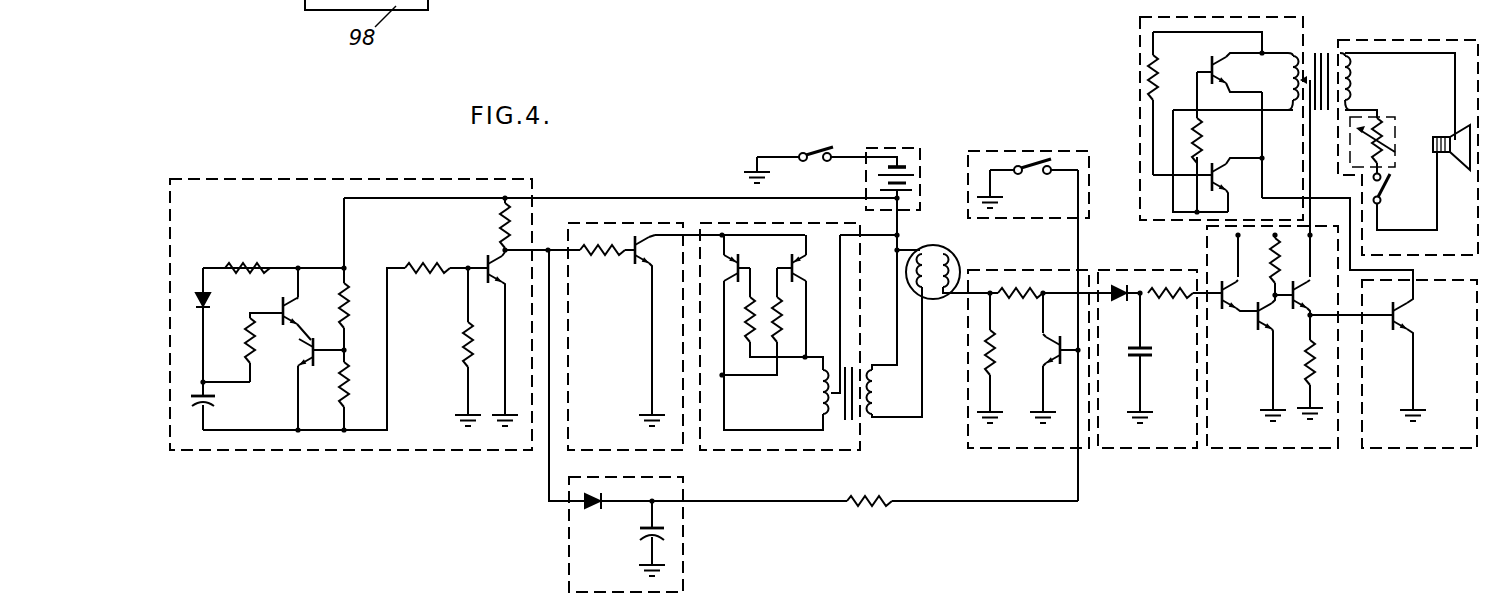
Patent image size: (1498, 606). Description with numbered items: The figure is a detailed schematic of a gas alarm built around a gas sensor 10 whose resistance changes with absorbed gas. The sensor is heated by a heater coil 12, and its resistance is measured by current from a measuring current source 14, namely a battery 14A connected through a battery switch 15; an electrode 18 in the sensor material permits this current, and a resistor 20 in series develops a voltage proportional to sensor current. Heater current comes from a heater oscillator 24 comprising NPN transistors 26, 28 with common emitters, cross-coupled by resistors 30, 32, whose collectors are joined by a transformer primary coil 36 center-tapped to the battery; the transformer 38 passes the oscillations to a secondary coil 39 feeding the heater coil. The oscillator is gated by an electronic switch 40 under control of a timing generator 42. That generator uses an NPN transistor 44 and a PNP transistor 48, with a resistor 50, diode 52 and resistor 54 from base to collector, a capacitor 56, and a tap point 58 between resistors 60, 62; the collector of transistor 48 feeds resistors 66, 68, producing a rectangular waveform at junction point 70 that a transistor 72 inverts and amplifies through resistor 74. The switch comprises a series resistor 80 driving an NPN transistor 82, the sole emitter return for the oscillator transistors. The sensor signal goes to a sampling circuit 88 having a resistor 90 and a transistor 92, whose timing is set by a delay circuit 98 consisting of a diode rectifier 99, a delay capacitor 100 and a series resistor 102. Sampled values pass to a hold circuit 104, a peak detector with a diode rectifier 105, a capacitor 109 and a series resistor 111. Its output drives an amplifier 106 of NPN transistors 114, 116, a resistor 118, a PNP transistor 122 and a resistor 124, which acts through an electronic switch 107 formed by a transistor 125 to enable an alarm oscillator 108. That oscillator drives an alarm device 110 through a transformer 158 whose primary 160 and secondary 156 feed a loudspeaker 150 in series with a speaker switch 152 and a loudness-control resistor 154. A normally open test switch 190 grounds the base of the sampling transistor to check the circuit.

The gas sensor 10 is at (956, 252).
The heater coil 12 is at (925, 287).
The measuring current source 14 is at (886, 143).
The battery 14A is at (908, 165).
The battery switch 15 is at (808, 152).
The electrode 18 is at (944, 292).
The resistor 20 is at (993, 366).
The heater oscillator 24 is at (819, 221).
The NPN transistor 26 is at (702, 283).
The NPN transistor 28 is at (802, 272).
The resistor 30 is at (748, 318).
The resistor 32 is at (781, 322).
The transformer primary coil 36 is at (820, 395).
The transformer 38 is at (830, 442).
The secondary coil 39 is at (878, 395).
The electronic switch 40 is at (654, 221).
The timing generator 42 is at (263, 177).
The NPN transistor 44 is at (293, 322).
The PNP transistor 48 is at (311, 351).
The resistor 50 is at (247, 349).
The diode 52 is at (211, 301).
The resistor 54 is at (257, 262).
The capacitor 56 is at (217, 402).
The tap point 58 is at (347, 348).
The resistor 60 is at (350, 300).
The resistor 62 is at (349, 392).
The resistor 66 is at (414, 263).
The resistor 68 is at (464, 345).
The junction point 70 is at (466, 272).
The transistor 72 is at (502, 276).
The resistor 74 is at (500, 215).
The series resistor 80 is at (606, 264).
The NPN transistor 82 is at (650, 258).
The sampling circuit 88 is at (1058, 452).
The resistor 90 is at (1020, 300).
The transistor 92 is at (1024, 359).
The delay circuit 98 is at (690, 545).
The diode rectifier 99 is at (606, 498).
The delay capacitor 100 is at (640, 529).
The series resistor 102 is at (866, 508).
The hold circuit 104 is at (1182, 452).
The diode rectifier 105 is at (1120, 302).
The amplifier 106 is at (1315, 452).
The electronic switch 107 is at (1458, 452).
The alarm oscillator 108 is at (1238, 14).
The capacitor 109 is at (1145, 360).
The alarm device 110 is at (1458, 36).
The series resistor 111 is at (1168, 302).
The NPN transistor 114 is at (1258, 302).
The NPN transistor 116 is at (1253, 325).
The resistor 118 is at (1270, 262).
The PNP transistor 122 is at (1334, 301).
The resistor 124 is at (1306, 355).
The transistor 125 is at (1414, 321).
The loudspeaker 150 is at (1459, 170).
The speaker switch 152 is at (1384, 189).
The loudness-control resistor 154 is at (1385, 120).
The secondary 156 is at (1352, 77).
The transformer 158 is at (1325, 45).
The primary 160 is at (1290, 80).
The test switch 190 is at (1006, 147).